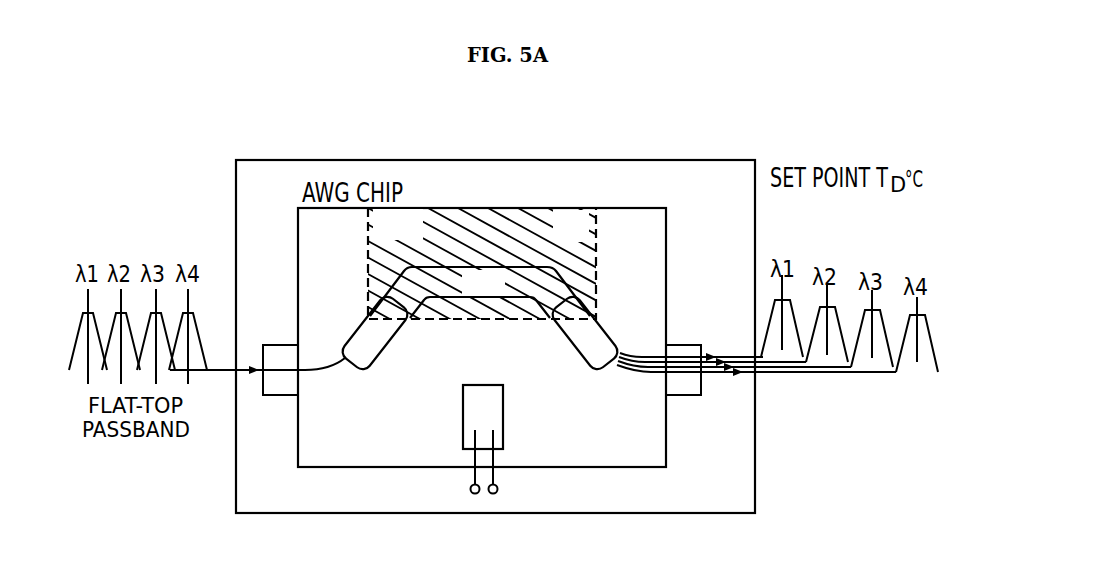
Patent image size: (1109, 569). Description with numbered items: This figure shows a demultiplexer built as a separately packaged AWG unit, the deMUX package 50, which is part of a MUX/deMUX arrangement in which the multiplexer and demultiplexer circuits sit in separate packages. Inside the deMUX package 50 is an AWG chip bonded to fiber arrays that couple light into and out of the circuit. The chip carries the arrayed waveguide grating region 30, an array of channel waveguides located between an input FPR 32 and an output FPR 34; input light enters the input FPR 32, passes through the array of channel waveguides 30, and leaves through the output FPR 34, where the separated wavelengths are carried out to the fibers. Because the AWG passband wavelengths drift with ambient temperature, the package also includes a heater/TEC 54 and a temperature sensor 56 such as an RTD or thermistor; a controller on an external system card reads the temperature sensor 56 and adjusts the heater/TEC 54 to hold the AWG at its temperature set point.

The array of channel waveguides 30 is at (497, 297).
The input free propagation region 32 is at (379, 359).
The output free propagation region 34 is at (608, 355).
The deMUX package 50 is at (718, 196).
The heater/TEC 54 is at (584, 240).
The temperature sensor 56 is at (506, 427).